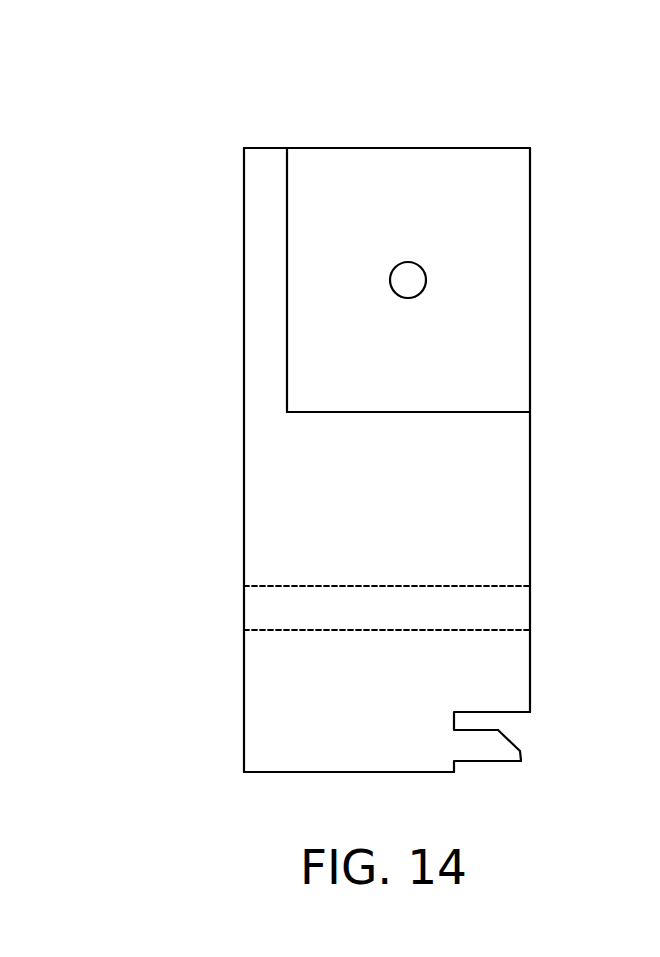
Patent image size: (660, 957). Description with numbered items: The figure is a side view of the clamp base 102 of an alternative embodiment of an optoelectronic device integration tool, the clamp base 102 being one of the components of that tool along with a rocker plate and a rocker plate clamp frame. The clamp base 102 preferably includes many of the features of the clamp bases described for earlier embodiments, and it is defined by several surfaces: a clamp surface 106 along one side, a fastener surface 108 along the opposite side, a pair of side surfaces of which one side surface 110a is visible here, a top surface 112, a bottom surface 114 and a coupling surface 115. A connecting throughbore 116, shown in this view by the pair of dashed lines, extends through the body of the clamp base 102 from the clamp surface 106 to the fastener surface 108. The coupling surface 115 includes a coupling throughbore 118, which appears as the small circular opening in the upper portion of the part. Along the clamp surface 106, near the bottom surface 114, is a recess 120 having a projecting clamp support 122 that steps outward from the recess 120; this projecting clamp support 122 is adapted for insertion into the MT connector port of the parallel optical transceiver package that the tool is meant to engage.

The clamp base 102 is at (427, 90).
The clamp surface 106 is at (529, 505).
The fastener surface 108 is at (244, 502).
The side surface 110a is at (283, 745).
The top surface 112 is at (287, 148).
The bottom surface 114 is at (387, 772).
The coupling surface 115 is at (505, 302).
The connecting throughbore 116 is at (350, 612).
The coupling throughbore 118 is at (410, 280).
The recess 120 is at (458, 718).
The projecting clamp support 122 is at (513, 740).